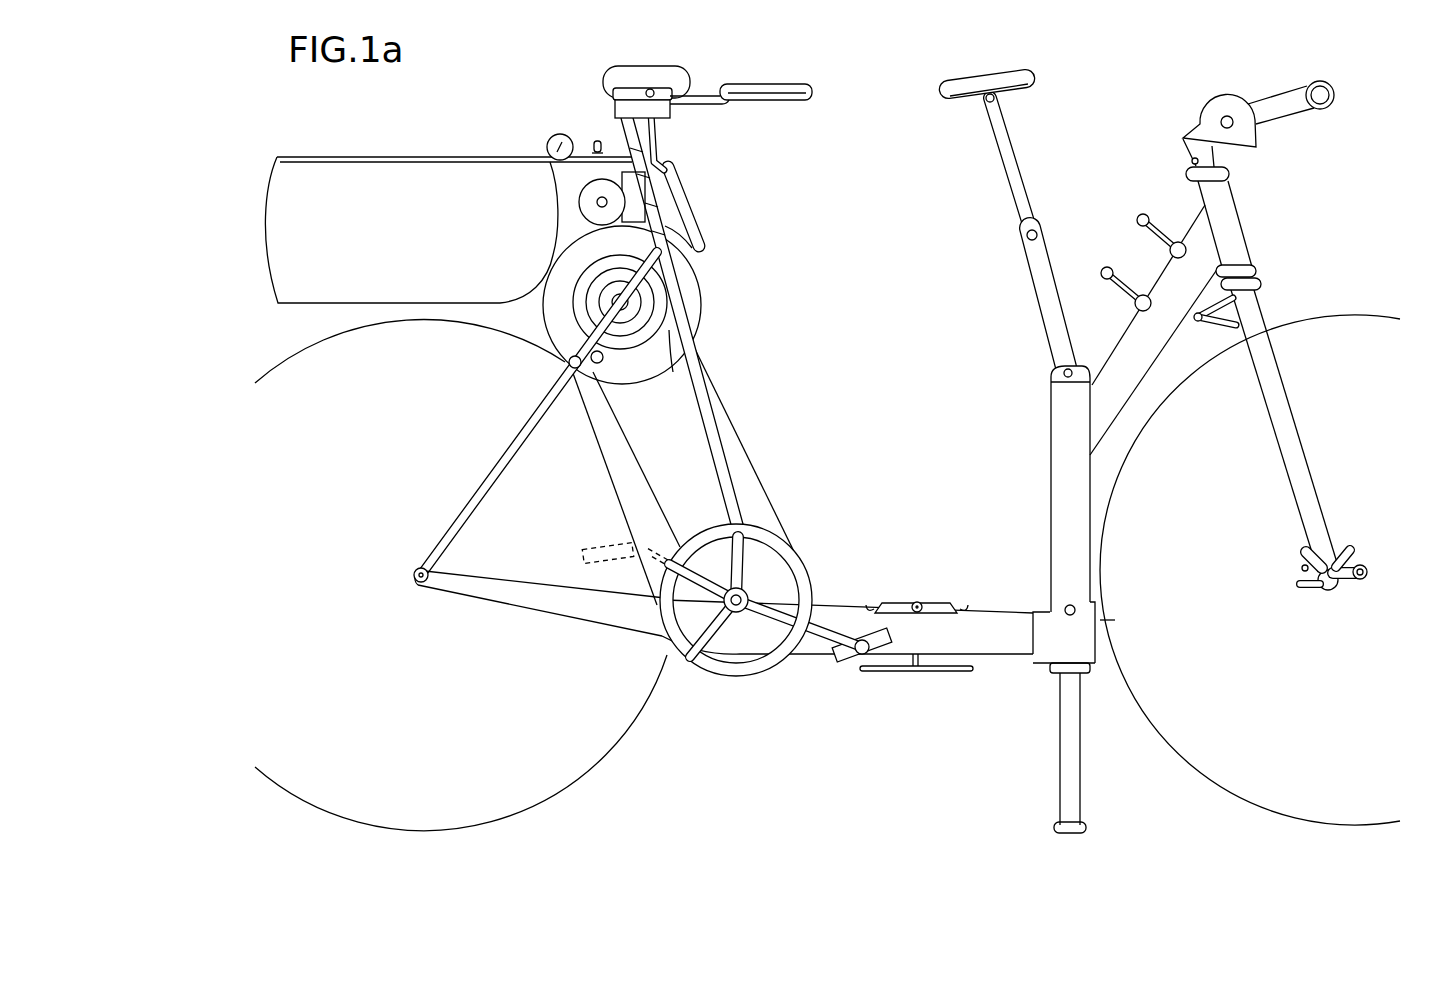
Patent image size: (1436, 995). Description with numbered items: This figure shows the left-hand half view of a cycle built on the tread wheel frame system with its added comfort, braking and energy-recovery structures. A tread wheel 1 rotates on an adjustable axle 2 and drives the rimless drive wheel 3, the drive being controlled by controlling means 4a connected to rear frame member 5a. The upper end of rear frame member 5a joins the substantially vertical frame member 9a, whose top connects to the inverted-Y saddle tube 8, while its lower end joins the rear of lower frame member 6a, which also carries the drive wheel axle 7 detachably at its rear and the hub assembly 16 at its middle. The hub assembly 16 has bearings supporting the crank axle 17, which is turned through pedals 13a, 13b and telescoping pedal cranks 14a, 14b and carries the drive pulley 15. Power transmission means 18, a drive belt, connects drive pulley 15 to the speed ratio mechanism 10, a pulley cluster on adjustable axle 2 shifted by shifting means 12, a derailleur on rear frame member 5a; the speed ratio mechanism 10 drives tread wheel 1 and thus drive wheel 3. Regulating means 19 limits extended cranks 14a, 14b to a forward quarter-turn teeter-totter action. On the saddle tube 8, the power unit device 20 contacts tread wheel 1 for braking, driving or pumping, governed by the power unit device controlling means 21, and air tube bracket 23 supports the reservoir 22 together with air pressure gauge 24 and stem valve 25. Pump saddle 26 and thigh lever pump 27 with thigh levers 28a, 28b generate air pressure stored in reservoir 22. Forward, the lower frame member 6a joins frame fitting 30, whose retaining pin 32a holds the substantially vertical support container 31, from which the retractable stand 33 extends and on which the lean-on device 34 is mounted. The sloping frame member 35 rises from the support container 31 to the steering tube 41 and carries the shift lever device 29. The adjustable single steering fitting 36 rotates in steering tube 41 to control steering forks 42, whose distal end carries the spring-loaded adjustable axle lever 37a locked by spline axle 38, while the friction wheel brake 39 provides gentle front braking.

The tread wheel 1 is at (700, 305).
The adjustable axle 2 is at (612, 306).
The drive wheel 3 is at (320, 337).
The controlling means 4a is at (600, 296).
The rear frame member 5a is at (541, 412).
The lower frame member 6a is at (545, 615).
The drive wheel axle 7 is at (423, 588).
The saddle tube 8 is at (700, 250).
The substantially vertical frame member 9a is at (711, 443).
The speed ratio mechanism 10 is at (670, 365).
The shifting means 12 is at (569, 369).
The pedal 13a is at (857, 662).
The pedal 13b is at (600, 545).
The pedal crank 14a is at (822, 652).
The pedal crank 14b is at (640, 563).
The drive pulley 15 is at (744, 682).
The hub assembly 16 is at (722, 613).
The crank axle 17 is at (733, 620).
The power transmission means 18 is at (738, 422).
The regulating means 19 is at (918, 598).
The power unit device 20 is at (588, 208).
The power unit device controlling means 21 is at (612, 172).
The reservoir 22 is at (352, 170).
The air tube bracket 23 is at (426, 153).
The air pressure gauge 24 is at (542, 146).
The stem valve 25 is at (592, 143).
The pump saddle 26 is at (603, 73).
The thigh lever pump 27 is at (613, 100).
The thigh lever 28a is at (663, 150).
The thigh lever 28b is at (715, 108).
The shift lever device 29 is at (1114, 259).
The frame fitting 30 is at (1045, 664).
The substantially vertical support container 31 is at (1050, 497).
The retaining pin 32a is at (1062, 608).
The retractable stand 33 is at (1058, 710).
The lean-on device 34 is at (1025, 238).
The sloping frame member 35 is at (1126, 330).
The adjustable single steering fitting 36 is at (1200, 122).
The spring-loaded adjustable axle lever 37a is at (1342, 590).
The spline axle 38 is at (1362, 560).
The friction wheel brake 39 is at (1232, 332).
The steering tube 41 is at (1236, 192).
The steering forks 42 is at (1291, 400).